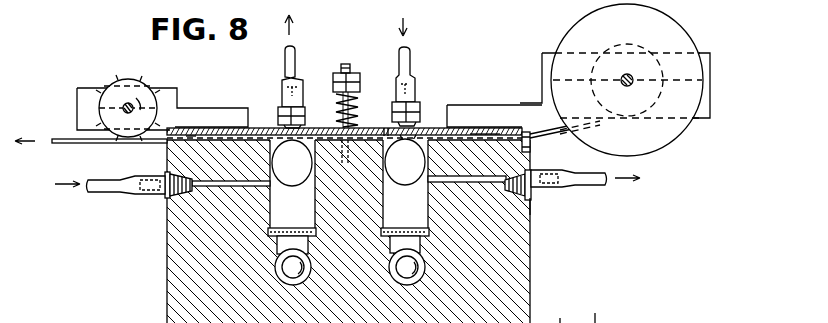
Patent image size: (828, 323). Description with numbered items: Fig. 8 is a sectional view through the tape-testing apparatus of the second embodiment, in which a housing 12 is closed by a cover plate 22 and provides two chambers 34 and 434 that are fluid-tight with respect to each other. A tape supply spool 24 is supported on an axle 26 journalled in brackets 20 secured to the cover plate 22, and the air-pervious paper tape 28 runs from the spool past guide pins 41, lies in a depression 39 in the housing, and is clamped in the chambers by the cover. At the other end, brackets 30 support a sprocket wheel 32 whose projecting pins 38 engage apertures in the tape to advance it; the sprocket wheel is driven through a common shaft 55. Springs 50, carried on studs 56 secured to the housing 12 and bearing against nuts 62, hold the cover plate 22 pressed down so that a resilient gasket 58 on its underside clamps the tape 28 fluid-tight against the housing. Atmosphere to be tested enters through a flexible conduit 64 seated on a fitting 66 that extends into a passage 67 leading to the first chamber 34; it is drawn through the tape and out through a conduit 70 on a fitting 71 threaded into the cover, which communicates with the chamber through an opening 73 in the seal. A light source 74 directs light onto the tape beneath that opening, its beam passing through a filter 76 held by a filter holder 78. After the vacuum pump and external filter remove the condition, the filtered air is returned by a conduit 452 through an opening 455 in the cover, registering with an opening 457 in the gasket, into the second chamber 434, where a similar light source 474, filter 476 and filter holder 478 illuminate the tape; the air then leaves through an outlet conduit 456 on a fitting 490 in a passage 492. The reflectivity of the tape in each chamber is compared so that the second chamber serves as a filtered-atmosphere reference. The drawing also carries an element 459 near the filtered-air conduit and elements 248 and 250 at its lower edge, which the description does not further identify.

The housing 12 is at (531, 242).
The brackets 20 is at (710, 96).
The cover plate 22 is at (257, 128).
The tape supply spool 24 is at (676, 30).
The axle 26 is at (629, 77).
The tape 28 is at (76, 143).
The brackets 30 is at (77, 97).
The sprocket wheel 32 is at (141, 82).
The chamber 34 is at (270, 208).
The projecting pins 38 is at (122, 77).
The depression 39 is at (190, 138).
The guide pins 41 is at (532, 150).
The springs 50 is at (338, 102).
The common shaft 55 is at (126, 106).
The studs 56 is at (350, 72).
The resilient gasket 58 is at (480, 137).
The nuts 62 is at (360, 88).
The flexible conduit 64 is at (104, 193).
The fitting 66 is at (165, 192).
The passage 67 is at (200, 187).
The flexible conduit 70 is at (291, 65).
The fitting 71 is at (299, 92).
The opening 73 is at (290, 138).
The light source 74 is at (284, 268).
The filter 76 is at (268, 232).
The filter holder 78 is at (276, 243).
The member 248 is at (603, 317).
The member 250 is at (568, 319).
The chamber 434 is at (420, 205).
The conduit 452 is at (410, 52).
The opening 455 is at (383, 128).
The outlet conduit 456 is at (594, 186).
The opening 457 is at (418, 137).
The plunger nut 459 is at (416, 88).
The light source 474 is at (415, 268).
The filter 476 is at (425, 228).
The filter holder 478 is at (430, 237).
The fitting 490 is at (535, 192).
The passage 492 is at (532, 205).